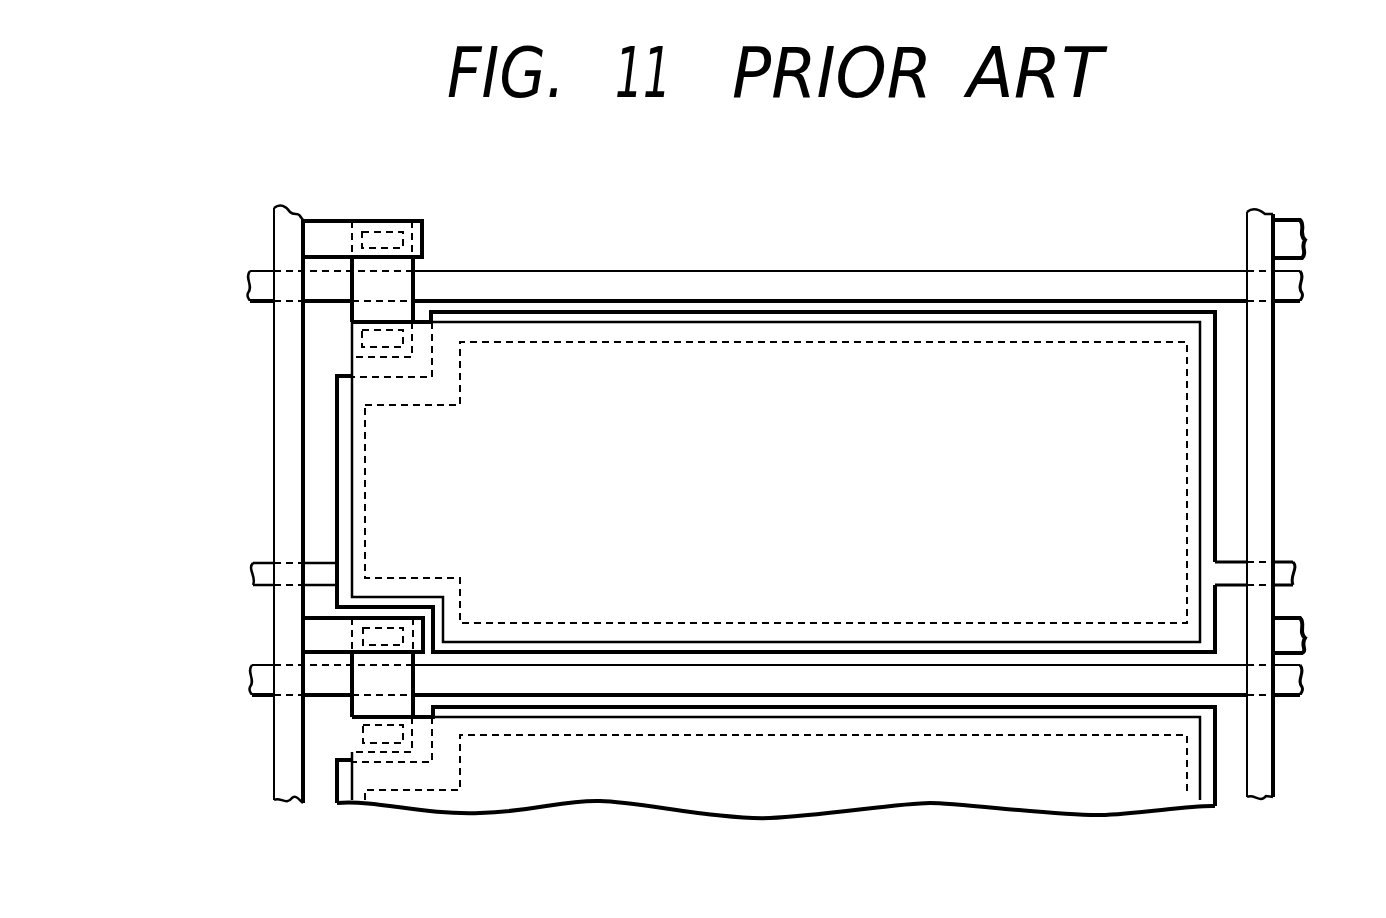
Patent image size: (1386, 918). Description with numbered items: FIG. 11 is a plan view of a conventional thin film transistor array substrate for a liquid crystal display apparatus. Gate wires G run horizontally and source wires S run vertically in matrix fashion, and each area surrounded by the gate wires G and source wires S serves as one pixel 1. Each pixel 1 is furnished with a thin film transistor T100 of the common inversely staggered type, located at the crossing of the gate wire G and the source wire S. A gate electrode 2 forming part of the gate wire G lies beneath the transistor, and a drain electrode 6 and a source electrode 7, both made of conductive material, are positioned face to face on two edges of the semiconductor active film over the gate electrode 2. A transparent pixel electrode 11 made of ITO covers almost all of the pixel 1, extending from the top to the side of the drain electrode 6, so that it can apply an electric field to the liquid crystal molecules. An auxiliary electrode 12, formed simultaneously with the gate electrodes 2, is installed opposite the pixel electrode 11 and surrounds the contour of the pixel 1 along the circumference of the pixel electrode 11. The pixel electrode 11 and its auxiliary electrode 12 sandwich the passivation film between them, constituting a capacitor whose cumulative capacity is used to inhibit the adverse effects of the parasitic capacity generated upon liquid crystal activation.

The thin film transistor T100 is at (340, 258).
The pixel 1 is at (1228, 372).
The gate electrode 2 is at (397, 287).
The drain electrode 6 is at (360, 310).
The source electrode 7 is at (410, 232).
The pixel electrode 11 is at (943, 360).
The auxiliary electrode 12 is at (343, 413).
The gate wire G is at (1138, 283).
The source wire S is at (285, 758).